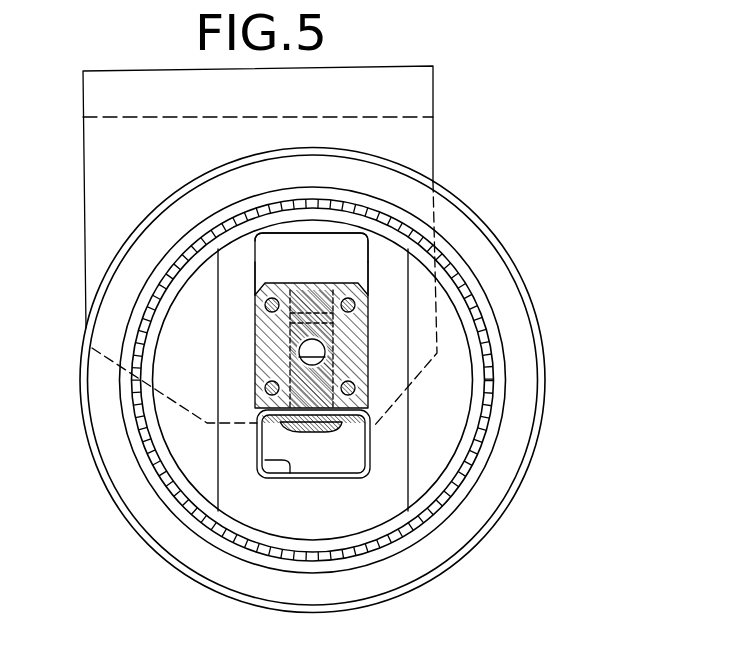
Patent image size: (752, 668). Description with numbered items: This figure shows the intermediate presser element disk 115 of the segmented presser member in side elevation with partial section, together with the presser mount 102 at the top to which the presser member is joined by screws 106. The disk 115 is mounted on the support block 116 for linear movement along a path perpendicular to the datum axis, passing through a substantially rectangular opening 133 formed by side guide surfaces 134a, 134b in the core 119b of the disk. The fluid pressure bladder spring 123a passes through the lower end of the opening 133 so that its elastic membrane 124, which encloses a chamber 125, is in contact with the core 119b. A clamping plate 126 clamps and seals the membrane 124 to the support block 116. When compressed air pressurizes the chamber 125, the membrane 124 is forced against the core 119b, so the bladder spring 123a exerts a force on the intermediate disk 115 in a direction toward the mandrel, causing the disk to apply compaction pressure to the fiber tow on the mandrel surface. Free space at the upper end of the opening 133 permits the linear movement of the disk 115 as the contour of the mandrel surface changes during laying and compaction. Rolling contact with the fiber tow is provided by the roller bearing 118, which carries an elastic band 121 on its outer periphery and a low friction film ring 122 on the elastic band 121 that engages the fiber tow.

The presser mount 102 is at (151, 164).
The screws 106 is at (368, 303).
The intermediate presser element disk 115 is at (546, 276).
The support block 116 is at (368, 342).
The roller bearing 118 is at (192, 510).
The core 119b is at (450, 449).
The elastic band 121 is at (522, 358).
The low friction film ring 122 is at (543, 411).
The fluid pressure bladder spring 123a is at (257, 443).
The elastic membrane 124 is at (290, 478).
The chamber 125 is at (360, 442).
The clamping plate 126 is at (355, 428).
The substantially rectangular opening 133 is at (367, 253).
The side guide surface 134a is at (262, 247).
The side guide surface 134b is at (365, 270).